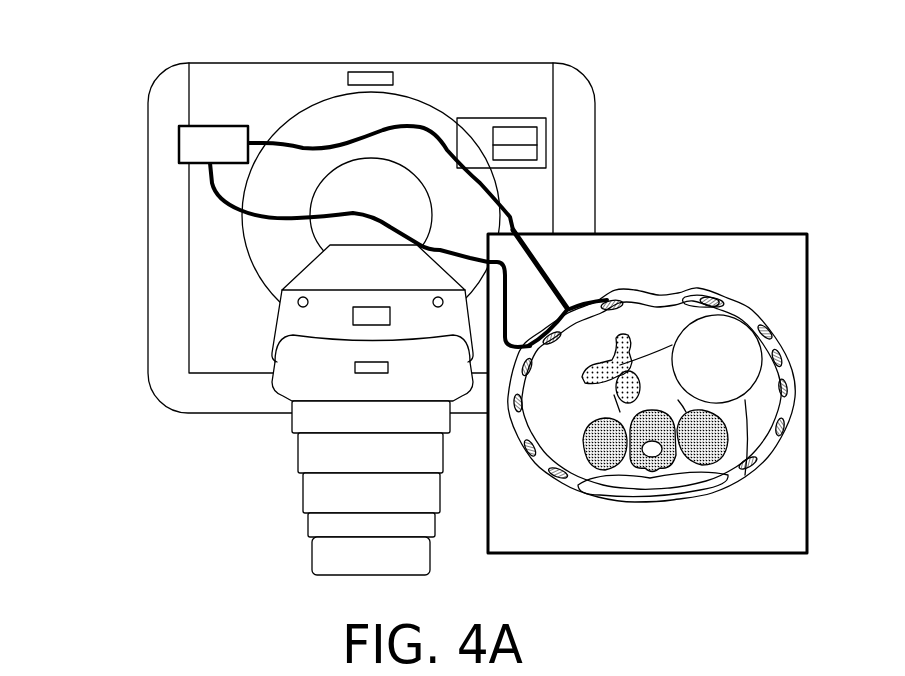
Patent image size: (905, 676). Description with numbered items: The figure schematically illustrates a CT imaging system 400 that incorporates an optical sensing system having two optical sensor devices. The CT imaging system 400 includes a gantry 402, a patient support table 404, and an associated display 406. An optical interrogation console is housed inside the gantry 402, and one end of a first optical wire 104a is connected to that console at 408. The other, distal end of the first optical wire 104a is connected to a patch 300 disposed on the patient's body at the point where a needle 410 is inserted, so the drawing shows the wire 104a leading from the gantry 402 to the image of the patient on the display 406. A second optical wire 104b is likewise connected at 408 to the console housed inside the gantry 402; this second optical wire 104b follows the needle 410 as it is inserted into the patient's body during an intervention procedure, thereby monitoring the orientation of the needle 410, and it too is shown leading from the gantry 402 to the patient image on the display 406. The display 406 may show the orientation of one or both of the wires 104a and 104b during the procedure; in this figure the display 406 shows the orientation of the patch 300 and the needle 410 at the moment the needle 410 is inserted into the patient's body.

The CT imaging system 400 is at (426, 289).
The gantry 402 is at (148, 317).
The patient support table 404 is at (303, 490).
The display 406 is at (647, 352).
The connection point 408 is at (179, 147).
The needle 410 is at (565, 280).
The first optical wire 104a is at (222, 203).
The second optical wire 104b is at (303, 148).
The patch 300 is at (585, 297).